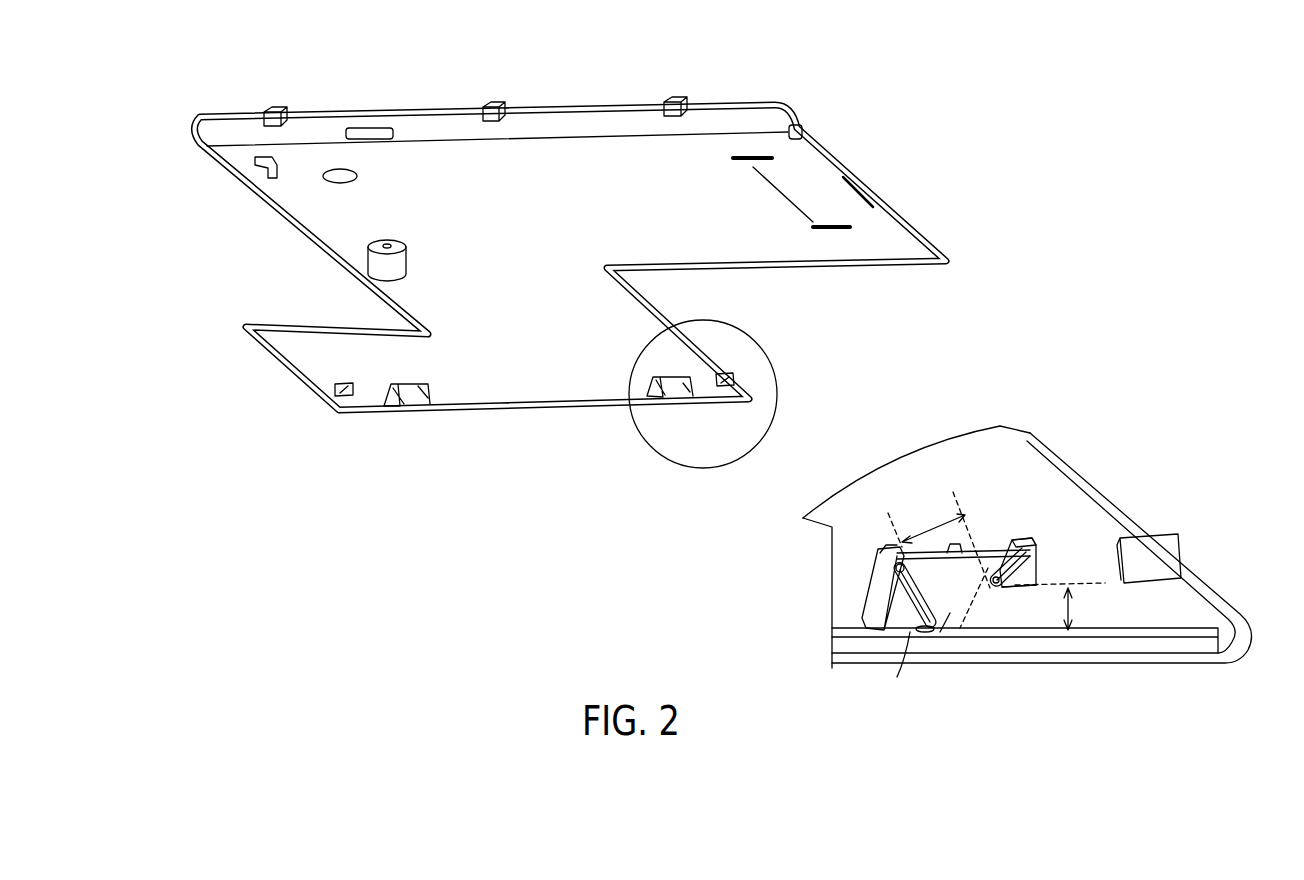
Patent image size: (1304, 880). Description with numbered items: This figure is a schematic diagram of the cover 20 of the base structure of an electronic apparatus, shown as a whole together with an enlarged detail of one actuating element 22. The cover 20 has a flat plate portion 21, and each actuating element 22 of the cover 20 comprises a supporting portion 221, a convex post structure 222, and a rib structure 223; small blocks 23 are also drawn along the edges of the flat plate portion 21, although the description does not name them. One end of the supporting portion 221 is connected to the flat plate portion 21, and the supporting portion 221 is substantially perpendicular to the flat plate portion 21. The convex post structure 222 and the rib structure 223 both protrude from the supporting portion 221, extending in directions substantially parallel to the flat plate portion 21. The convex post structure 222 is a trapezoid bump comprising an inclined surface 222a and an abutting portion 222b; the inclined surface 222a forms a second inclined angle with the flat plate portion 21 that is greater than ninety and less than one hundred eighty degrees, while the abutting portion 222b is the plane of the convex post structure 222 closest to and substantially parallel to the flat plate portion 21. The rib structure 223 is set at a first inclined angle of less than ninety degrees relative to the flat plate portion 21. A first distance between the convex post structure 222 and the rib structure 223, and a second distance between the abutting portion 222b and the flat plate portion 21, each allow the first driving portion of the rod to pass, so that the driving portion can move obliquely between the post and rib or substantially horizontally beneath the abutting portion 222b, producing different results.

The cover 20 is at (965, 121).
The flat plate portion 21 is at (813, 173).
The actuating element 22 is at (744, 510).
The positioning block 23 is at (680, 100).
The supporting portion 221 is at (877, 598).
The convex post structure 222 is at (1044, 601).
The inclined surface 222a is at (1015, 547).
The abutting portion 222b is at (1013, 587).
The rib structure 223 is at (893, 578).